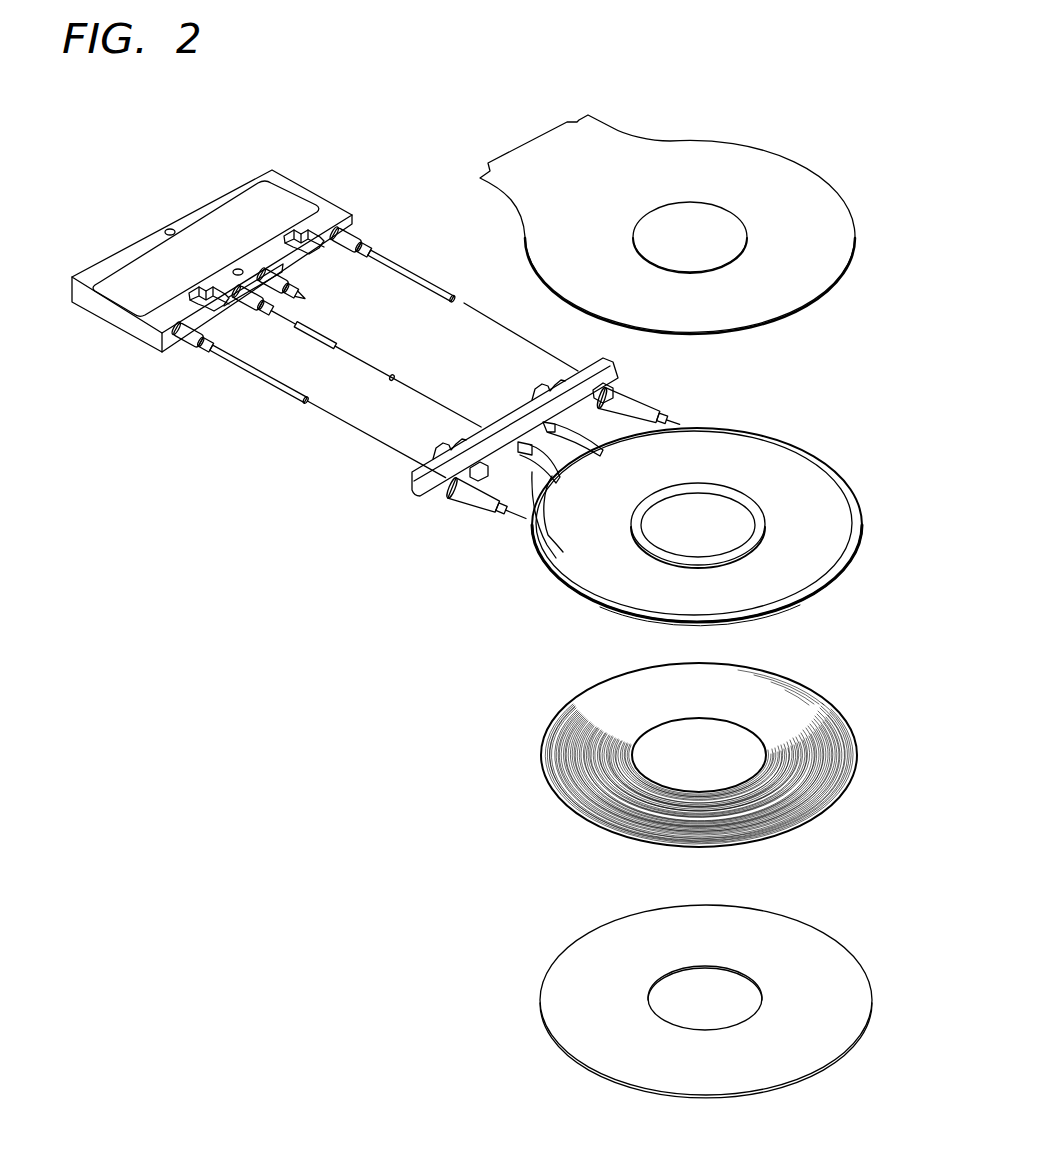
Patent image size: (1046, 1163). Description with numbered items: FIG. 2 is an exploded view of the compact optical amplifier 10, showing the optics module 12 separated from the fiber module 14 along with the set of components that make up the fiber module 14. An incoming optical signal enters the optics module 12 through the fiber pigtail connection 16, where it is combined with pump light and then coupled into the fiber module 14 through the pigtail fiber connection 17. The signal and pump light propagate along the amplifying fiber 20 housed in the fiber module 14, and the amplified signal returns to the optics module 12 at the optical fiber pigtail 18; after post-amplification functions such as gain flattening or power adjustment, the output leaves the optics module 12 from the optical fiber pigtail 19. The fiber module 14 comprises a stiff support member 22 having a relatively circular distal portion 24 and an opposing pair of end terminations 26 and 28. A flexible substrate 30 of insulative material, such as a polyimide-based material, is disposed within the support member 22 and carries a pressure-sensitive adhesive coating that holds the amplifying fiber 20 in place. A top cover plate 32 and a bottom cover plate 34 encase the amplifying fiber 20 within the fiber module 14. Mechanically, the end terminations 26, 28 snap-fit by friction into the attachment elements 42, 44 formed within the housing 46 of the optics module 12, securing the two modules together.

The compact optical amplifier 10 is at (184, 120).
The optics module 12 is at (120, 318).
The fiber module 14 is at (716, 97).
The fiber pigtail connection 16 is at (190, 352).
The pigtail fiber connection 17 is at (289, 300).
The optical fiber pigtail 18 is at (286, 292).
The optical fiber pigtail 19 is at (364, 234).
The amplifying fiber 20 is at (565, 775).
The stiff support member 22 is at (460, 515).
The circular distal portion 24 is at (784, 468).
The end termination 26 is at (446, 438).
The end termination 28 is at (540, 382).
The flexible substrate 30 is at (800, 566).
The top cover plate 32 is at (800, 182).
The bottom cover plate 34 is at (570, 1018).
The attachment element 42 is at (190, 297).
The attachment element 44 is at (290, 237).
The housing 46 is at (88, 270).